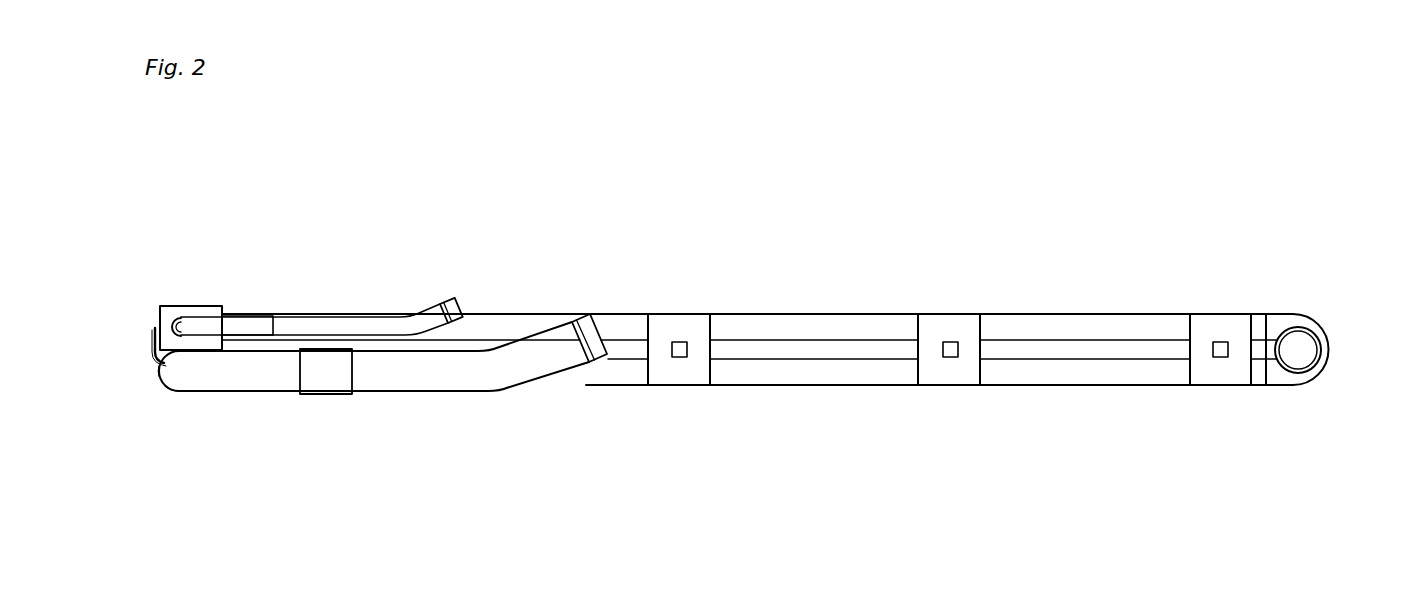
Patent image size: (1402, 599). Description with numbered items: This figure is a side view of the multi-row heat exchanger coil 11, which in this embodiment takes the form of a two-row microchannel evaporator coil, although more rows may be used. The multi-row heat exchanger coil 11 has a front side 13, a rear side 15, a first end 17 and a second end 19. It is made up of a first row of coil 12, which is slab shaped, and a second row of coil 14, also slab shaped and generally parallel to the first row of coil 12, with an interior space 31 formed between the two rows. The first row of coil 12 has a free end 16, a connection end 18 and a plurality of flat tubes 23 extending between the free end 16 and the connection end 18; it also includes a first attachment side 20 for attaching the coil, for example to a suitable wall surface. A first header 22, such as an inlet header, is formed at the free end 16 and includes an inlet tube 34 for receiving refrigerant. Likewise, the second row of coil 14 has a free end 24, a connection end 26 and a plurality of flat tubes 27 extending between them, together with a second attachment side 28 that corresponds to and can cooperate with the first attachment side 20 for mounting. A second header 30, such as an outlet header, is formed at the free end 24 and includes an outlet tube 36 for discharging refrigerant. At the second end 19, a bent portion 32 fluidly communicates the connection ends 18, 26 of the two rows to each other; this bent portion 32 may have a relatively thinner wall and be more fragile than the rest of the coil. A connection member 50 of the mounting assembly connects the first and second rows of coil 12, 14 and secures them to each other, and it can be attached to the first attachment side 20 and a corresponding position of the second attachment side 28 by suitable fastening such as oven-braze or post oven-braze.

The multi-row heat exchanger coil 11 is at (807, 222).
The first row of coil 12 is at (1025, 270).
The front side 13 is at (762, 315).
The second row of coil 14 is at (998, 408).
The rear side 15 is at (733, 385).
The free end 16 is at (157, 323).
The first end 17 is at (143, 349).
The connection end 18 is at (1257, 325).
The second end 19 is at (1318, 400).
The first attachment side 20 is at (1065, 325).
The first header 22 is at (155, 325).
The flat tubes 23 is at (838, 325).
The free end 24 is at (165, 393).
The connection end 26 is at (1258, 372).
The flat tubes 27 is at (848, 360).
The second attachment side 28 is at (1113, 362).
The second header 30 is at (158, 372).
The interior space 31 is at (757, 360).
The bent portion 32 is at (1305, 330).
The inlet tube 34 is at (422, 312).
The outlet tube 36 is at (440, 391).
The connection member 50 is at (672, 325).